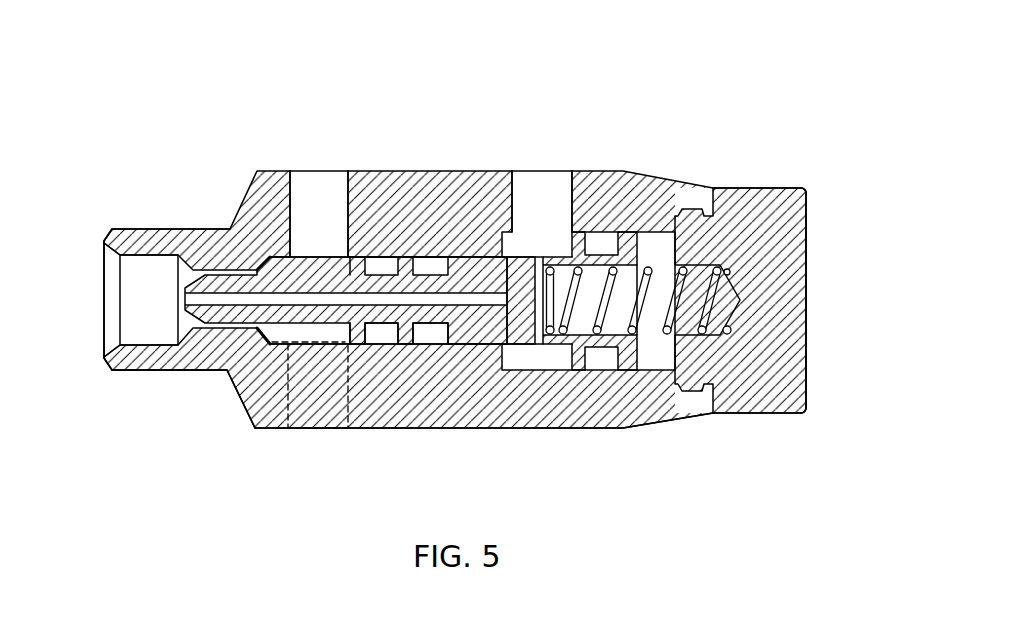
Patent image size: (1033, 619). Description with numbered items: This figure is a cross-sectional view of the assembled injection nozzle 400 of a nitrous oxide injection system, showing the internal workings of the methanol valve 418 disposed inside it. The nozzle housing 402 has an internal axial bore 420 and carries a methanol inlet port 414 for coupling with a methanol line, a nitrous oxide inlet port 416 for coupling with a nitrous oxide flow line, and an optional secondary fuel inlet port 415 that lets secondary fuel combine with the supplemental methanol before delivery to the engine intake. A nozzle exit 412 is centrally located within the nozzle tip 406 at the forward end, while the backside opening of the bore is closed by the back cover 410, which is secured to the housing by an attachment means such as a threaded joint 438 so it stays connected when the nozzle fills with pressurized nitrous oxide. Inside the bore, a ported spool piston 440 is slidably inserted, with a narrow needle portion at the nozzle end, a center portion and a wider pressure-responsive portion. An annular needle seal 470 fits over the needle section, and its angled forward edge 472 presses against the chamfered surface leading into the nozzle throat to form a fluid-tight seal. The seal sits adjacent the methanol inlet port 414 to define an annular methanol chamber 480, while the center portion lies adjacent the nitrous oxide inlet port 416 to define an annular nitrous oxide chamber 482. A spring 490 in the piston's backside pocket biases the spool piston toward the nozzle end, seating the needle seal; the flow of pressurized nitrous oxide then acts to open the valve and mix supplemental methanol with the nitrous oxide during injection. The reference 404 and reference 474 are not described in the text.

The injection nozzle 400 is at (760, 93).
The nozzle housing 402 is at (418, 172).
The outer surface of valve body 404 is at (628, 428).
The nozzle tip 406 is at (162, 228).
The back cover 410 is at (806, 252).
The nozzle exit 412 is at (152, 256).
The methanol inlet port 414 is at (290, 203).
The secondary fuel inlet port 415 is at (332, 428).
The nitrous oxide inlet port 416 is at (512, 228).
The methanol valve 418 is at (205, 358).
The axial bore 420 is at (440, 254).
The threaded joint 438 is at (692, 392).
The ported spool piston 440 is at (407, 322).
The annular needle seal 470 is at (340, 369).
The forward edge of the needle seal 472 is at (259, 264).
The step 474 is at (353, 337).
The annular methanol chamber 480 is at (538, 360).
The annular nitrous oxide chamber 482 is at (310, 340).
The spring 490 is at (646, 268).